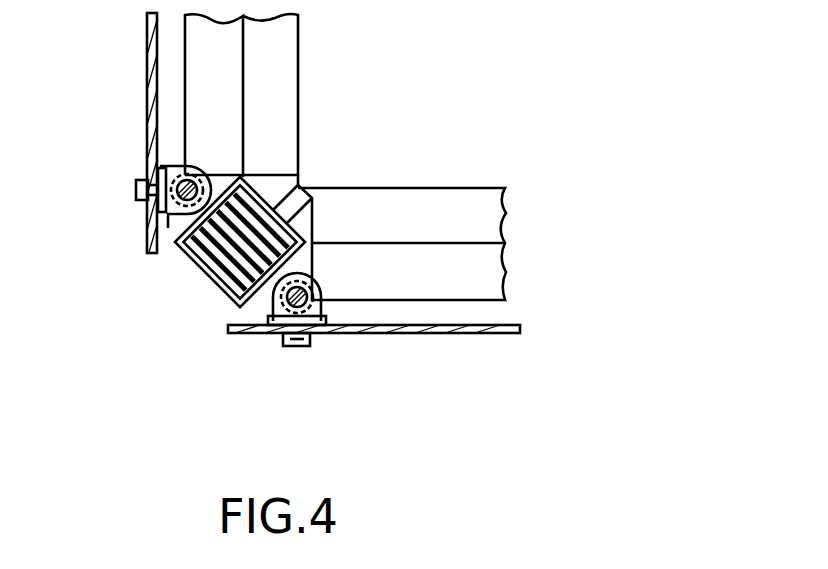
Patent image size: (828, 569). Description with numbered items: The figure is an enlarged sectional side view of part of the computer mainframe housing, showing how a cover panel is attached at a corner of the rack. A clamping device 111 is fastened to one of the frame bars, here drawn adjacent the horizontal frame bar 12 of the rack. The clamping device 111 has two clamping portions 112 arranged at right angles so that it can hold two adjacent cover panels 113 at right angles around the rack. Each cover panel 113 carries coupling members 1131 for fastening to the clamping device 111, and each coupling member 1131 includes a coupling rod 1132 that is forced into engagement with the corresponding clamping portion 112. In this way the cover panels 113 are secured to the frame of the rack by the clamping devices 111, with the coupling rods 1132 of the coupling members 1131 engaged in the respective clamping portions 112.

The horizontal frame bar 12 is at (280, 72).
The clamping device 111 is at (322, 202).
The clamping portion 112 is at (178, 160).
The cover panel 113 is at (148, 48).
The coupling member 1131 is at (160, 212).
The coupling rod 1132 is at (142, 178).